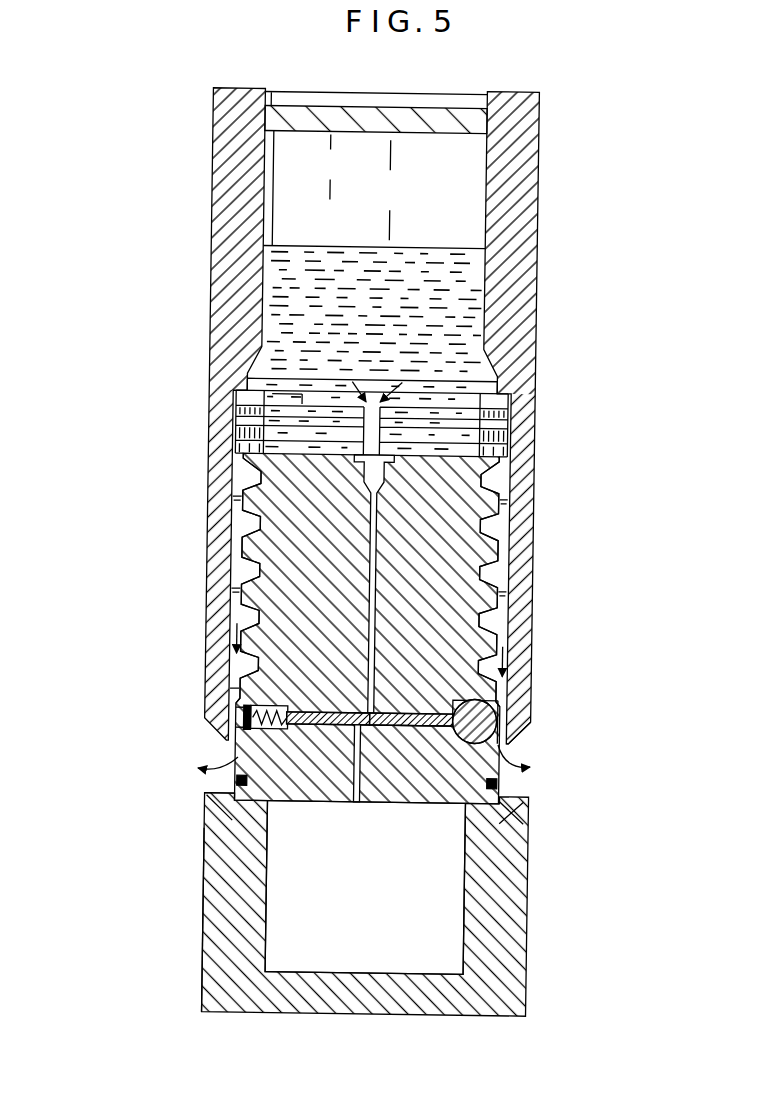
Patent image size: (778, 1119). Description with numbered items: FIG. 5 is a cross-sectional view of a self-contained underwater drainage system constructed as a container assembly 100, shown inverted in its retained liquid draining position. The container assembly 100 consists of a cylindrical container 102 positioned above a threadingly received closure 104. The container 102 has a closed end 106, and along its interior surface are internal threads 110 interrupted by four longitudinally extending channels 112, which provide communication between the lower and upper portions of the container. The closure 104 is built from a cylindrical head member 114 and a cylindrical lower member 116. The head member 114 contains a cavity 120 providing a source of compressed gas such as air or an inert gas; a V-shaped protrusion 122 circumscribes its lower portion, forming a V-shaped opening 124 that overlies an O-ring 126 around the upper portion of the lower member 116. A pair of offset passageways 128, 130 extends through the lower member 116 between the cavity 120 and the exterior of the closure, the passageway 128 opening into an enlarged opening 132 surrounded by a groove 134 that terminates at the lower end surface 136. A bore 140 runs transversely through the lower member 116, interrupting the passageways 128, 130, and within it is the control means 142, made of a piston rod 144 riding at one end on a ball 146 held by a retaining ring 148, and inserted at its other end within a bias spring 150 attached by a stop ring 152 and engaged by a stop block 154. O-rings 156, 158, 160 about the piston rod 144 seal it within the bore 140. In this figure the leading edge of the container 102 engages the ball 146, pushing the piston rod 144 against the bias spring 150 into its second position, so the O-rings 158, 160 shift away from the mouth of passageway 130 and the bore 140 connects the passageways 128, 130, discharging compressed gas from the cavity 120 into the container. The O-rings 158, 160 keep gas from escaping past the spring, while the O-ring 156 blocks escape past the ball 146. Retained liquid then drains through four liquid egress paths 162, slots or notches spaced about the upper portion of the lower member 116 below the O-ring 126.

The container assembly 100 is at (574, 77).
The container 102 is at (541, 272).
The closure 104 is at (533, 915).
The closed end 106 is at (400, 115).
The internal threads 110 is at (488, 565).
The channels 112 is at (377, 442).
The head member 114 is at (218, 915).
The lower member 116 is at (423, 635).
The cavity 120 is at (380, 930).
The V-shaped protrusion 122 is at (213, 805).
The V-shaped opening 124 is at (237, 783).
The O-ring 126 is at (497, 785).
The passageway 128 is at (375, 578).
The passageway 130 is at (360, 783).
The enlarged opening 132 is at (307, 392).
The groove 134 is at (410, 452).
The surface 136 is at (300, 452).
The bore 140 is at (463, 698).
The control means 142 is at (497, 707).
The piston rod 144 is at (398, 728).
The ball 146 is at (520, 738).
The retaining ring 148 is at (498, 702).
The bias spring 150 is at (233, 738).
The stop ring 152 is at (290, 717).
The stop block 154 is at (233, 713).
The O-ring 156 is at (437, 730).
The O-ring 158 is at (347, 728).
The O-ring 160 is at (303, 730).
The liquid egress paths 162 is at (498, 770).